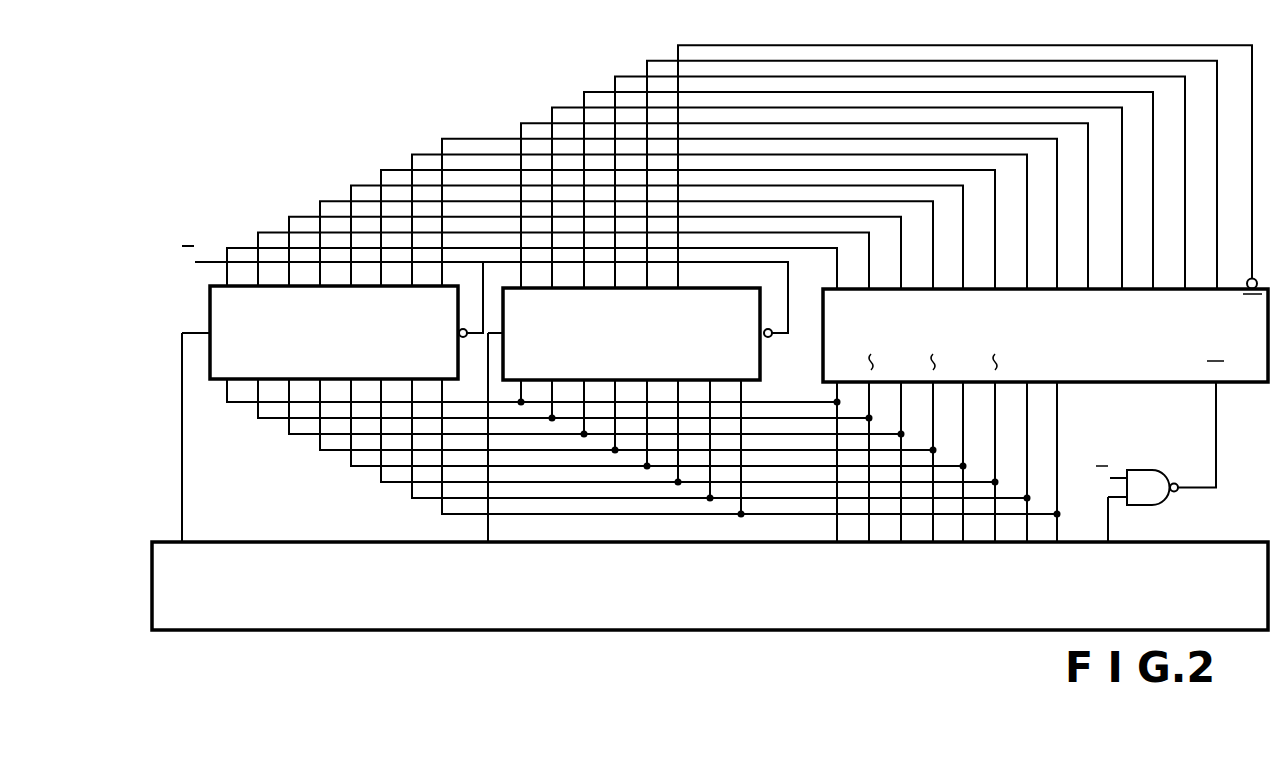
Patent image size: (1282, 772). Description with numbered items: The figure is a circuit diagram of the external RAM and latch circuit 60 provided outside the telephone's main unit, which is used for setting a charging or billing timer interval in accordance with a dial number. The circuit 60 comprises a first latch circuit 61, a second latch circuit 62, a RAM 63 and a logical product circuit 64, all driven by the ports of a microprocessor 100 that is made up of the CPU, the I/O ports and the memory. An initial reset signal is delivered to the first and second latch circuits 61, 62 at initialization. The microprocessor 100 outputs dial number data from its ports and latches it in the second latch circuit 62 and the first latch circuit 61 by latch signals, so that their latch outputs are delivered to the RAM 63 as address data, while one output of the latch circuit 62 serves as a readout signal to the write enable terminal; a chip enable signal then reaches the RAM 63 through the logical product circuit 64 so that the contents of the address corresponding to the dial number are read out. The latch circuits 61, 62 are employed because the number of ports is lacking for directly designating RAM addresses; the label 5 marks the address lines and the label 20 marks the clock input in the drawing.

The address bus lines 5 is at (642, 214).
The clock input line 20 is at (196, 417).
The external RAM and latch circuit 60 is at (687, 294).
The first latch circuit 61 is at (466, 340).
The second latch circuit 62 is at (765, 343).
The RAM 63 is at (1238, 384).
The logical product circuit 64 is at (1163, 506).
The microprocessor 100 is at (1253, 541).